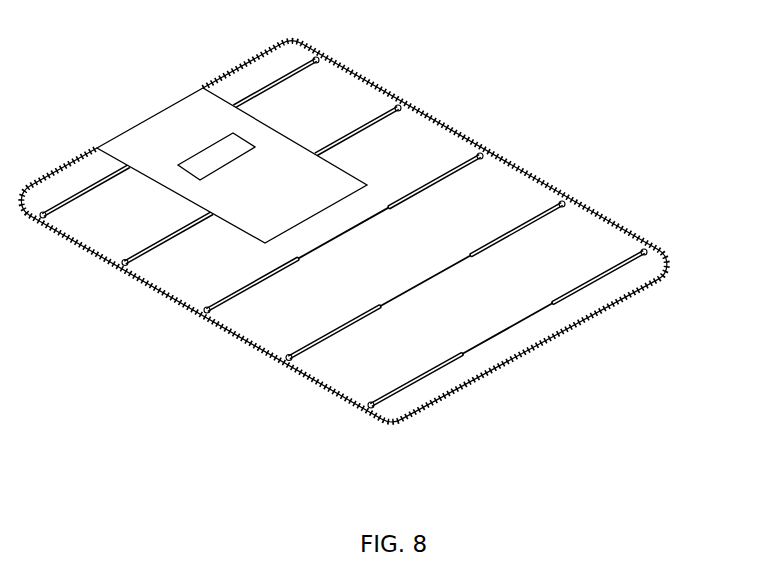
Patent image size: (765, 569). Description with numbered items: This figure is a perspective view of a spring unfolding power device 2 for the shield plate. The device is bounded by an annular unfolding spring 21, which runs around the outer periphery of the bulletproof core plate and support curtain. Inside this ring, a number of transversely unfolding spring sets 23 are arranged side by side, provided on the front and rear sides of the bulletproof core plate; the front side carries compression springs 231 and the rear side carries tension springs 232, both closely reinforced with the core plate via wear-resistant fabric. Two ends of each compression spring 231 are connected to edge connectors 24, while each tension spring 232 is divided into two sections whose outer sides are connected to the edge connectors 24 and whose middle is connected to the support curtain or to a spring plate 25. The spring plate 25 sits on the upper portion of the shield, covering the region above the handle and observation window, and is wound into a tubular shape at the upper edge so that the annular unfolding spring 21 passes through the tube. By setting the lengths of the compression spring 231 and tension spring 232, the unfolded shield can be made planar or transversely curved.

The unfolding power device 2 is at (346, 270).
The annular unfolding spring 21 is at (165, 293).
The transversely unfolding spring set 23 is at (445, 370).
The compression spring 231 is at (573, 298).
The tension spring 232 is at (602, 268).
The edge connector 24 is at (293, 372).
The spring plate 25 is at (187, 117).